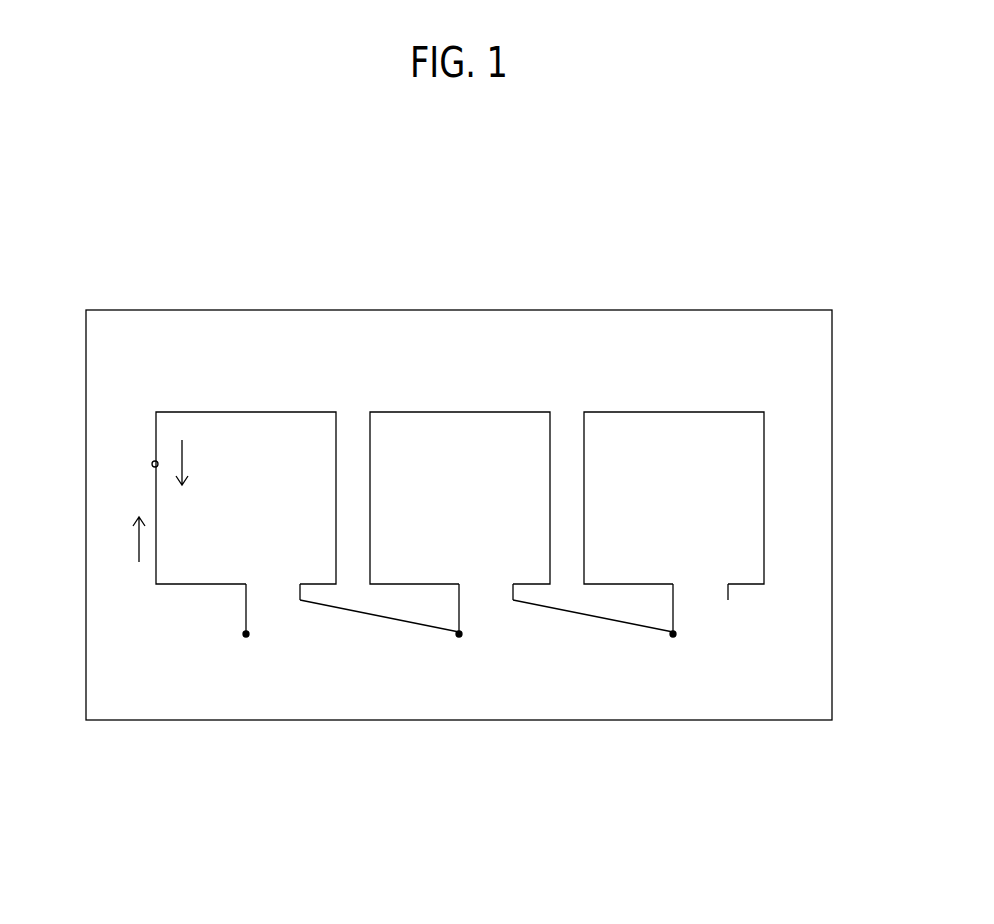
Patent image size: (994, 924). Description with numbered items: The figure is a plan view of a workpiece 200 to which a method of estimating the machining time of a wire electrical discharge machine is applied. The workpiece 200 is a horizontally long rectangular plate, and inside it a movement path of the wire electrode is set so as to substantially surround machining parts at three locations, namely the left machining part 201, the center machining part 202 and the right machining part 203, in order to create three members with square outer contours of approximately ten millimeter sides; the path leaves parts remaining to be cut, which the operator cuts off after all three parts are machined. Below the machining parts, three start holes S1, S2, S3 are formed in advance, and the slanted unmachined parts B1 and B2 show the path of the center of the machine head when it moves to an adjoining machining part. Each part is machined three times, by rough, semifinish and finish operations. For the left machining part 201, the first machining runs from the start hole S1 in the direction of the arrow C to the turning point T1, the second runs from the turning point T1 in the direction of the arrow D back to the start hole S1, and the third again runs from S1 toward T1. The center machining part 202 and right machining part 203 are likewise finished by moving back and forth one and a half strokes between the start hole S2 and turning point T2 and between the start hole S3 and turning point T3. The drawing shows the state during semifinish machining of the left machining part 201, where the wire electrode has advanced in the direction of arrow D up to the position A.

The workpiece 200 is at (803, 400).
The left machining part 201 is at (252, 452).
The center machining part 202 is at (443, 453).
The right machining part 203 is at (658, 453).
The position A is at (152, 463).
The arrow C is at (139, 543).
The arrow D is at (185, 452).
The start hole S1 is at (244, 637).
The turning point T1 is at (300, 600).
The unmachined part B1 is at (375, 617).
The start hole S2 is at (457, 637).
The turning point T2 is at (513, 600).
The unmachined part B2 is at (590, 618).
The start hole S3 is at (671, 637).
The turning point T3 is at (728, 600).